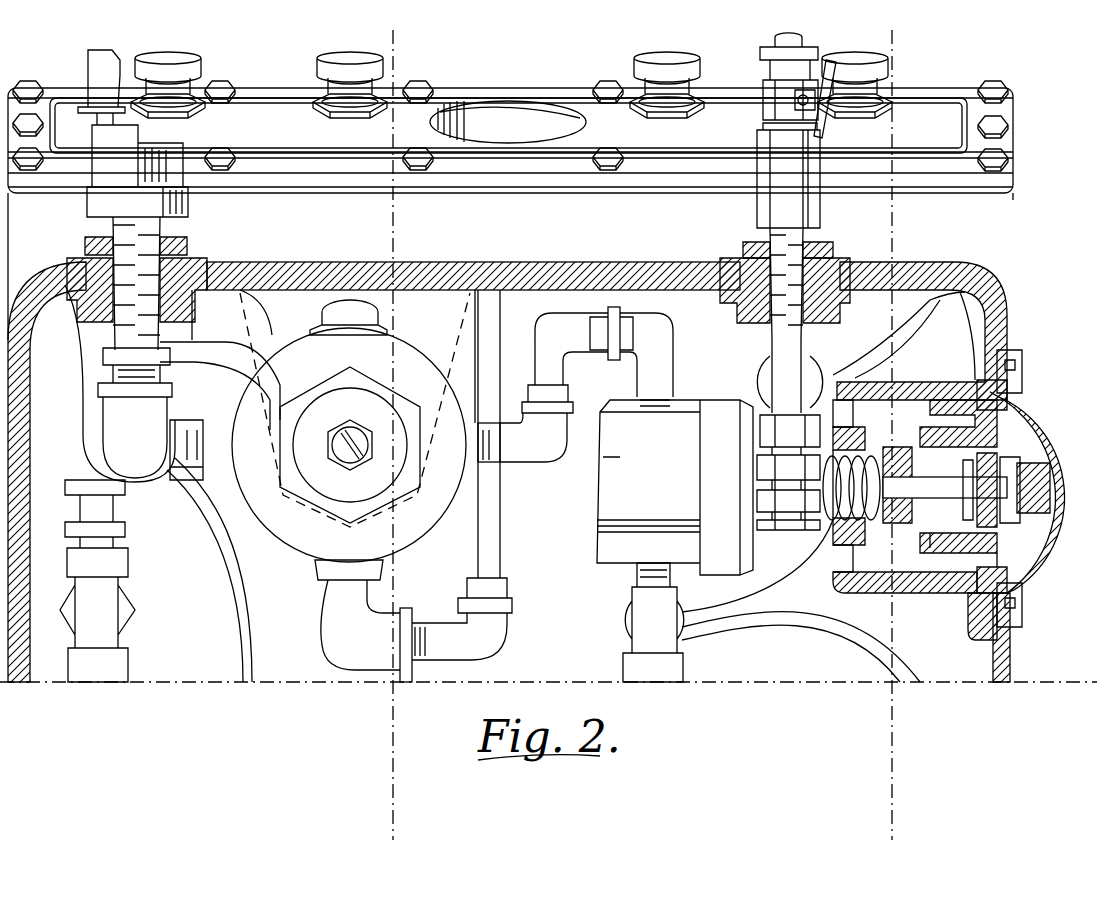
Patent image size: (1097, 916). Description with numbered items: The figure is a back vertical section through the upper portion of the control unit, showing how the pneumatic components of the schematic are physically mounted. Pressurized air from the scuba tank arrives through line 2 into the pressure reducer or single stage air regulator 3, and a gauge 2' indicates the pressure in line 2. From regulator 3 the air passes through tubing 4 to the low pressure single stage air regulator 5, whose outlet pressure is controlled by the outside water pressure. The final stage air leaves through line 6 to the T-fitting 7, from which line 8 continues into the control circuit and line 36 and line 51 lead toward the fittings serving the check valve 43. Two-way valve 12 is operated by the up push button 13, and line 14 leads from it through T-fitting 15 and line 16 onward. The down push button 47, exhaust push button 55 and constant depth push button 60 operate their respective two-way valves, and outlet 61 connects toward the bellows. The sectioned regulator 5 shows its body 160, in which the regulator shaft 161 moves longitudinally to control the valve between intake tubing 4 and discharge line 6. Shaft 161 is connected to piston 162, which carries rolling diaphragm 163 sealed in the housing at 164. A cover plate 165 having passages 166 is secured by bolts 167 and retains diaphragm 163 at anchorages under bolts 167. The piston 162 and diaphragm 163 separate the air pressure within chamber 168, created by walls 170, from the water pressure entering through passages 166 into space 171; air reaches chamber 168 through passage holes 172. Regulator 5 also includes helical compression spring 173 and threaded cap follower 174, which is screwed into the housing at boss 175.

The line 2 is at (116, 266).
The gauge 2' is at (508, 100).
The pressure reducer or single stage air regulator 3 is at (405, 357).
The tubing 4 is at (555, 337).
The low pressure single stage air regulator 5 is at (612, 488).
The line 6 is at (637, 577).
The T-fitting 7 is at (647, 613).
The line 8 is at (755, 603).
The two-way valve 12 is at (883, 92).
The up push button 13 is at (863, 60).
The line 14 is at (897, 338).
The T-fitting 15 is at (783, 363).
The line 16 is at (772, 48).
The line 36 is at (853, 637).
The check valve 43 is at (125, 608).
The down push button 47 is at (665, 60).
The line 51 is at (213, 345).
The exhaust push button 55 is at (372, 51).
The constant depth push button 60 is at (173, 63).
The outlet 61 is at (217, 520).
The body 160 is at (675, 487).
The regulator shaft 161 is at (945, 487).
The piston 162 is at (958, 436).
The rolling diaphragm 163 is at (1010, 570).
The seal 164 is at (1003, 590).
The cover plate 165 is at (1010, 535).
The passages 166 is at (1012, 412).
The bolts 167 is at (1013, 610).
The chamber 168 is at (908, 558).
The walls 170 is at (873, 590).
The space 171 is at (1000, 553).
The passage holes 172 is at (853, 415).
The helical compression spring 173 is at (830, 512).
The threaded cap follower 174 is at (902, 510).
The boss 175 is at (867, 540).